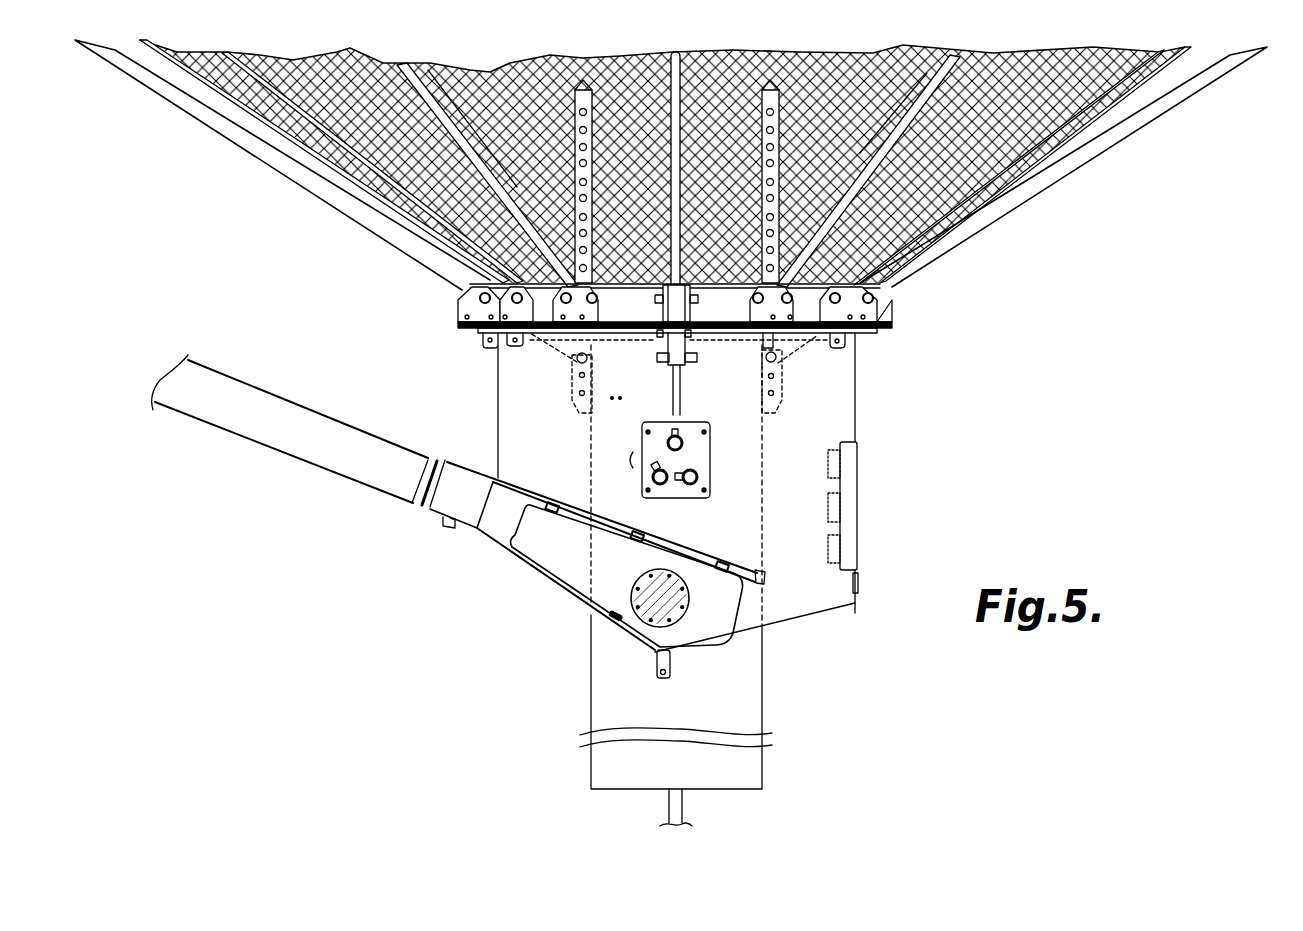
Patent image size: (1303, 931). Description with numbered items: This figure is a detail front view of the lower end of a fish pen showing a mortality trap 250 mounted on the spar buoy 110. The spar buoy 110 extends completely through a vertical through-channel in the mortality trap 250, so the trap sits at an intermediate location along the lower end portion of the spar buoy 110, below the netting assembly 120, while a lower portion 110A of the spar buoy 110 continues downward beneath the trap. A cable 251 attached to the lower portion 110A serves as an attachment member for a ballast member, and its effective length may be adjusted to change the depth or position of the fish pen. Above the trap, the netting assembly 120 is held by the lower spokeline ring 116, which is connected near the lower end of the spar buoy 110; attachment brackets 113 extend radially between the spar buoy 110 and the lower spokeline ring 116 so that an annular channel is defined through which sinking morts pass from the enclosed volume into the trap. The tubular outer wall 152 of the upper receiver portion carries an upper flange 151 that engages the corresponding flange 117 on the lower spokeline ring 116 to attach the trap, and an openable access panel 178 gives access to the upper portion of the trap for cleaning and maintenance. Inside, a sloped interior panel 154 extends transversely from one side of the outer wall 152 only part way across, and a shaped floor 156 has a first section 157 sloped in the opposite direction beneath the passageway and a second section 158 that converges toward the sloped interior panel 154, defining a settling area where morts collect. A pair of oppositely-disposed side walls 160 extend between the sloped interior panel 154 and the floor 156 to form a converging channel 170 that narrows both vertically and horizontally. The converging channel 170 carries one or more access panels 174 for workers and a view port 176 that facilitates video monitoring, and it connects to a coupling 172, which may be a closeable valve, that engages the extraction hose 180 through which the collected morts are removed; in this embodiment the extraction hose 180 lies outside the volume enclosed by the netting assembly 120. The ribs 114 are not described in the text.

The spar buoy 110 is at (585, 80).
The lower portion of the spar buoy 110A is at (610, 713).
The attachment brackets 113 is at (790, 357).
The support rib 114 is at (1067, 175).
The lower spokeline ring 116 is at (709, 344).
The flange 117 is at (897, 328).
The netting assembly 120 is at (1130, 107).
The upper flange 151 is at (820, 347).
The tubular outer wall 152 is at (852, 433).
The sloped interior panel 154 is at (560, 512).
The shaped floor 156 is at (740, 649).
The first section of the floor 157 is at (828, 613).
The second section of the floor 158 is at (608, 632).
The side walls 160 is at (497, 520).
The converging channel 170 is at (521, 573).
The coupling 172 is at (425, 512).
The access panels 174 is at (583, 572).
The view ports 176 is at (673, 622).
The openable access panel 178 is at (857, 497).
The extraction hose 180 is at (290, 400).
The mortality trap 250 is at (913, 449).
The cable 251 is at (685, 803).